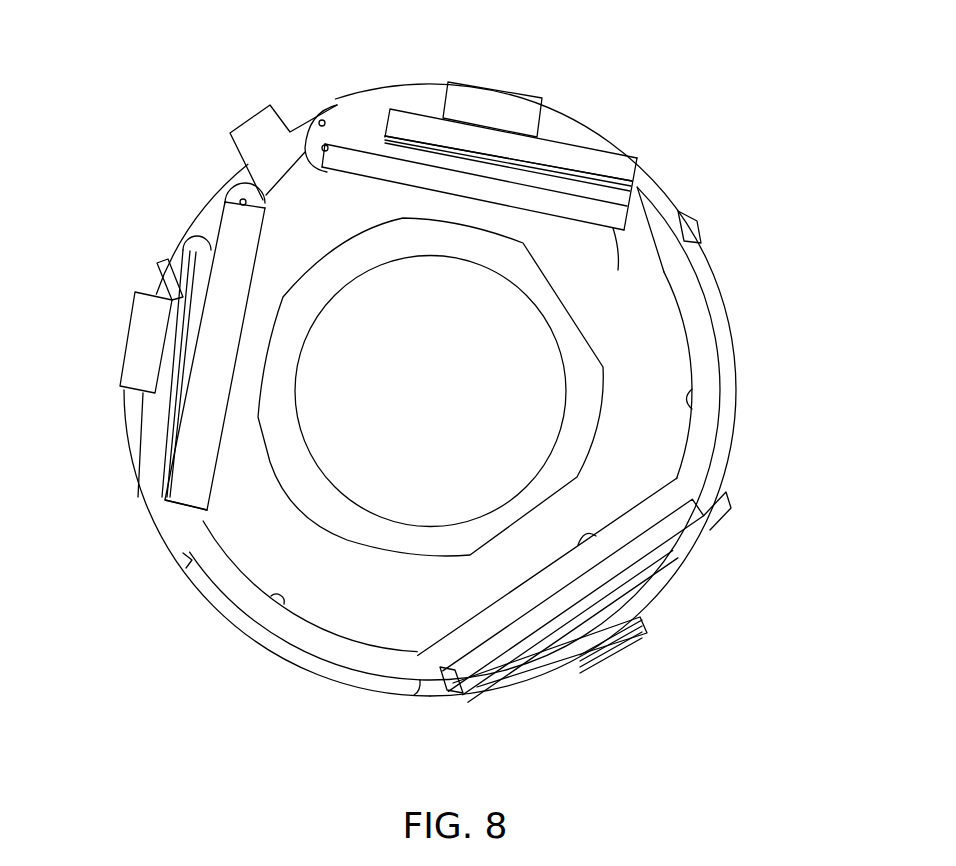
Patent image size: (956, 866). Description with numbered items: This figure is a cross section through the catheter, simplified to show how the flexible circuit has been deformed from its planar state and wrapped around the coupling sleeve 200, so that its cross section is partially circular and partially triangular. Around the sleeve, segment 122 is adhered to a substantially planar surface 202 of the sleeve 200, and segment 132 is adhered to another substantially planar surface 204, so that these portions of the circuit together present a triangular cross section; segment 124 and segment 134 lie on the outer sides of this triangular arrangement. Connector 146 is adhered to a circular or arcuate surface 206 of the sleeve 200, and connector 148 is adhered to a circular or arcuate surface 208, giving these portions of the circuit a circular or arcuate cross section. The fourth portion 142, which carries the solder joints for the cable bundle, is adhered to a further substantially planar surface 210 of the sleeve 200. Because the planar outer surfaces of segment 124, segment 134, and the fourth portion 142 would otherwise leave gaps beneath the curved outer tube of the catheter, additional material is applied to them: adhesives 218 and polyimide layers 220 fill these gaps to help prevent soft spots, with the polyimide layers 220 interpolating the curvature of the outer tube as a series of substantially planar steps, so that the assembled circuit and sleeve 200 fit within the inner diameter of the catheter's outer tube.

The segment 122 is at (190, 505).
The segment 124 is at (170, 478).
The segment 132 is at (618, 212).
The segment 134 is at (610, 192).
The fourth portion 142 is at (518, 640).
The connector 146 is at (320, 650).
The connector 148 is at (700, 338).
The coupling sleeve 200 is at (263, 148).
The substantially planar surface 202 is at (212, 492).
The substantially planar surface 204 is at (625, 268).
The circular surface 206 is at (278, 606).
The circular surface 208 is at (690, 397).
The substantially planar surface 210 is at (590, 540).
The adhesives 218 is at (168, 283).
The polyimide layers 220 is at (135, 360).